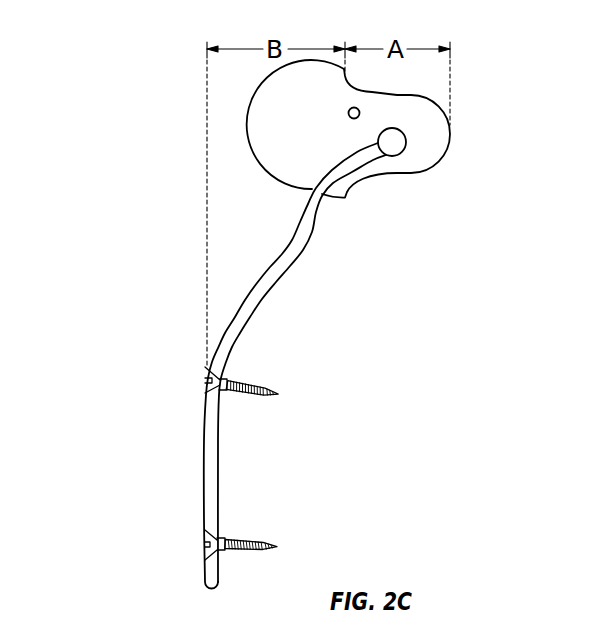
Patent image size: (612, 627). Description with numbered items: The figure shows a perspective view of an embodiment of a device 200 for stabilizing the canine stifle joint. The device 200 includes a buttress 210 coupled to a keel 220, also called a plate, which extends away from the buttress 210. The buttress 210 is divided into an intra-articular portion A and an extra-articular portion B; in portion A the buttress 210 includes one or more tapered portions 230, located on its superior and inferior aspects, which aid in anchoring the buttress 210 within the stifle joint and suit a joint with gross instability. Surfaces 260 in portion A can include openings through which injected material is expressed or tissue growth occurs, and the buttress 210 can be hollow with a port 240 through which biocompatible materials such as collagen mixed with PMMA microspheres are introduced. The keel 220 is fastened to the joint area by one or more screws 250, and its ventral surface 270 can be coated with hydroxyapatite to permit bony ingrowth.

The device 200 is at (165, 74).
The buttress 210 is at (293, 157).
The keel 220 is at (223, 338).
The tapered portions 230 is at (407, 92).
The port 240 is at (348, 111).
The screws 250 is at (260, 383).
The surfaces 260 is at (451, 132).
The ventral surface 270 is at (203, 473).